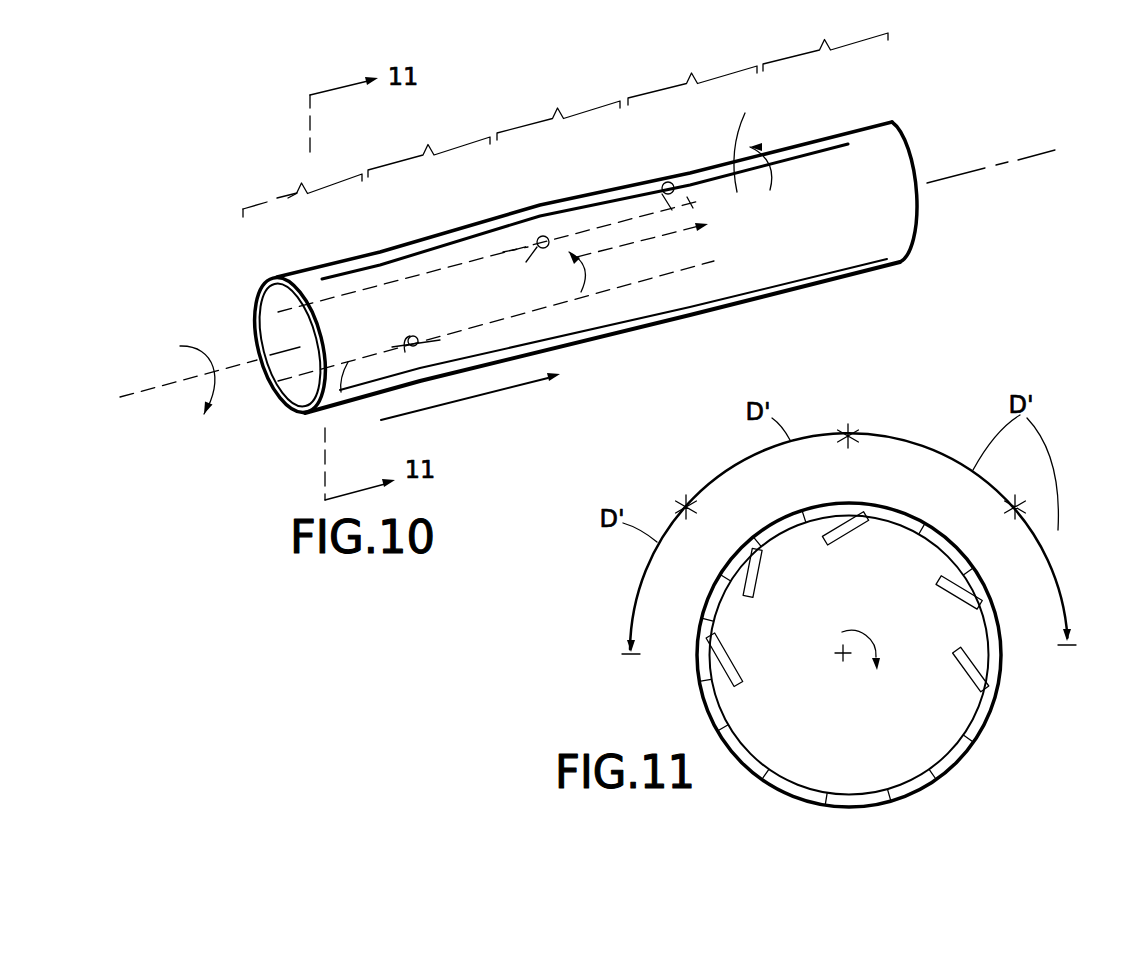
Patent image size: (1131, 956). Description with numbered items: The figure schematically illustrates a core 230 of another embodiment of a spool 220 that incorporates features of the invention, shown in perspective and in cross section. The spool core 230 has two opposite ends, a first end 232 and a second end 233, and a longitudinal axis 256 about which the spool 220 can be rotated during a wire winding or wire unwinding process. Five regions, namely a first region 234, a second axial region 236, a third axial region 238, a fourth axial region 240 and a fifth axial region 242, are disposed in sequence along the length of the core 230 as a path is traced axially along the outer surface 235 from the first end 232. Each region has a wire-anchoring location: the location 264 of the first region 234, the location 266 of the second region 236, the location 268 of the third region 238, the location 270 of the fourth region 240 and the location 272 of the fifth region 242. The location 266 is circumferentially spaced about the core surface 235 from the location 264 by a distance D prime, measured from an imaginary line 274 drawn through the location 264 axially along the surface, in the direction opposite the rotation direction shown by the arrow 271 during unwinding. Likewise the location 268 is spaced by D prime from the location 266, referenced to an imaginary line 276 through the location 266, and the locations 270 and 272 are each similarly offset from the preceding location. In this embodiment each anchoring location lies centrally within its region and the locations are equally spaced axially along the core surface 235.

In FIG. 10, the spool 220 is at (205, 300).
In FIG. 10, the core 230 is at (622, 312).
In FIG. 11, the core 230 is at (957, 768).
In FIG. 10, the first end 232 is at (262, 388).
In FIG. 10, the second end 233 is at (917, 240).
In FIG. 10, the first region 234 is at (302, 183).
In FIG. 10, the outer surface 235 is at (798, 250).
In FIG. 11, the outer surface 235 is at (757, 768).
In FIG. 10, the second axial region 236 is at (429, 142).
In FIG. 10, the third axial region 238 is at (558, 109).
In FIG. 10, the fourth axial region 240 is at (692, 69).
In FIG. 10, the fifth axial region 242 is at (825, 37).
In FIG. 10, the longitudinal axis 256 is at (133, 397).
In FIG. 10, the wire-anchoring location 264 is at (423, 348).
In FIG. 11, the wire-anchoring location 264 is at (990, 678).
In FIG. 10, the wire-anchoring location 266 is at (547, 248).
In FIG. 11, the wire-anchoring location 266 is at (970, 575).
In FIG. 10, the wire-anchoring location 268 is at (661, 187).
In FIG. 11, the wire-anchoring location 268 is at (845, 498).
In FIG. 11, the wire-anchoring location 270 is at (743, 545).
In FIG. 10, the arrow 271 is at (180, 358).
In FIG. 11, the arrow 271 is at (865, 685).
In FIG. 11, the wire-anchoring location 272 is at (697, 642).
In FIG. 10, the imaginary line 274 is at (327, 410).
In FIG. 10, the imaginary line 276 is at (757, 139).